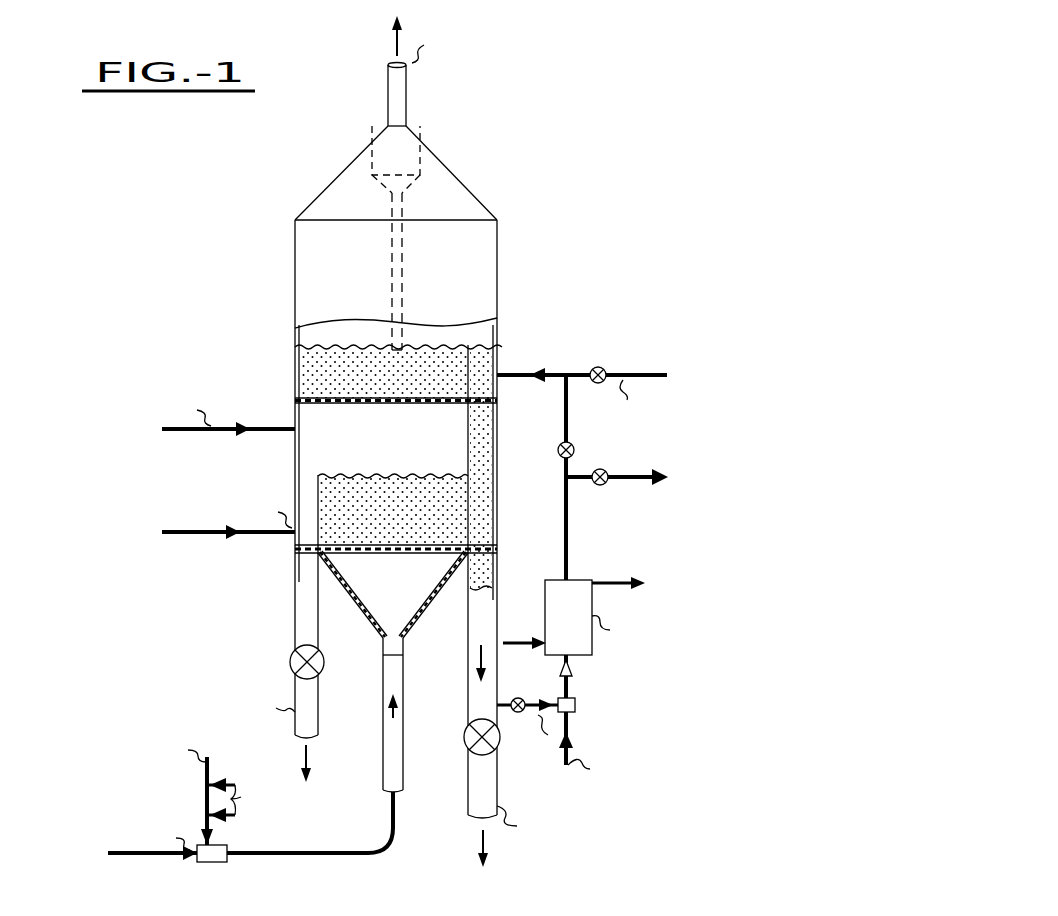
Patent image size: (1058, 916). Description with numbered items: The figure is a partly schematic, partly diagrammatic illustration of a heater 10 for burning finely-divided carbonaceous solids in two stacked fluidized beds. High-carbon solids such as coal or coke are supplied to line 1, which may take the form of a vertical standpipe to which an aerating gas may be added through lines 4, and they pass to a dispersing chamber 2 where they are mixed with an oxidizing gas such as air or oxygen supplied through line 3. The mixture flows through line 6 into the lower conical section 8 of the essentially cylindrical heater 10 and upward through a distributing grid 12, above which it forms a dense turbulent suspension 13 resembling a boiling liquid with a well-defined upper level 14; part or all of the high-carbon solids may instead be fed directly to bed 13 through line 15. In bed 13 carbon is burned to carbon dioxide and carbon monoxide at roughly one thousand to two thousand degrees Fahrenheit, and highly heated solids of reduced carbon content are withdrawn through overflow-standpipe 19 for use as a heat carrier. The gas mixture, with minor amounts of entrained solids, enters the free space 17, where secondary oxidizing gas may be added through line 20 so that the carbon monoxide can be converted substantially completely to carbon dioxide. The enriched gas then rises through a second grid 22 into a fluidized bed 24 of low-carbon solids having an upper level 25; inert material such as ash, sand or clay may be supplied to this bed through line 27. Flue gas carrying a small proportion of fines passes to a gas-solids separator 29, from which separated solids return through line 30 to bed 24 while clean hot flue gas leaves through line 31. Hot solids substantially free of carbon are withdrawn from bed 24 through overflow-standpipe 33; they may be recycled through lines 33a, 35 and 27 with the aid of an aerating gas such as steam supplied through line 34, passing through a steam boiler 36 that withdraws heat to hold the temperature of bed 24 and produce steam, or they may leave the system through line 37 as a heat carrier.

The line 1 is at (206, 812).
The dispersing chamber 2 is at (206, 862).
The line 3 is at (158, 860).
The lines 4 is at (233, 800).
The line 6 is at (353, 860).
The lower conical section 8 is at (361, 622).
The heater 10 is at (295, 280).
The distributing grid 12 is at (450, 545).
The dense turbulent suspension 13 is at (450, 512).
The upper level 14 is at (360, 472).
The line 15 is at (218, 536).
The free space 17 is at (384, 439).
The overflow-standpipe 19 is at (295, 630).
The line 20 is at (215, 432).
The second grid 22 is at (295, 390).
The fluidized bed 24 is at (295, 356).
The upper level 25 is at (445, 347).
The line 27 is at (612, 372).
The gas-solids separator 29 is at (368, 152).
The line 30 is at (403, 262).
The line 31 is at (407, 97).
The overflow-standpipe 33 is at (497, 364).
The line 33a is at (507, 737).
The line 34 is at (574, 726).
The line 35 is at (569, 526).
The steam boiler 36 is at (580, 648).
The line 37 is at (487, 786).